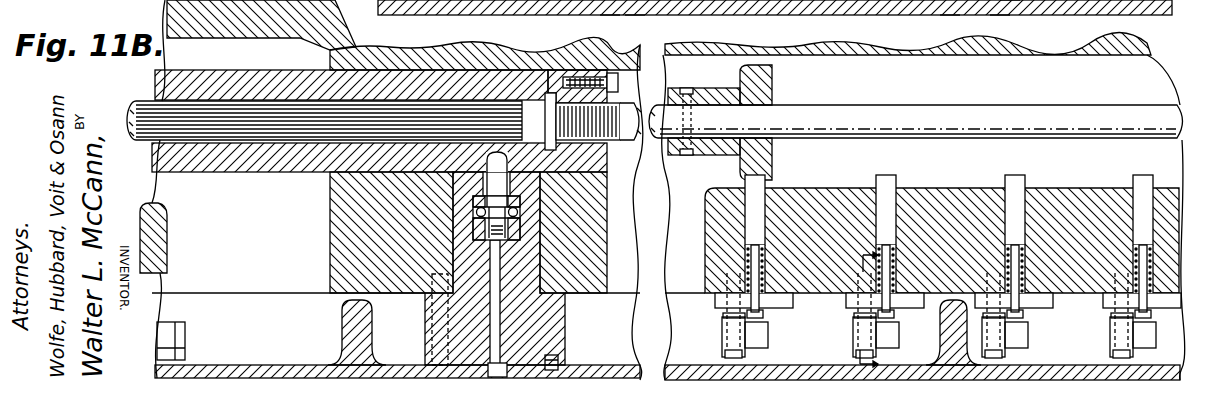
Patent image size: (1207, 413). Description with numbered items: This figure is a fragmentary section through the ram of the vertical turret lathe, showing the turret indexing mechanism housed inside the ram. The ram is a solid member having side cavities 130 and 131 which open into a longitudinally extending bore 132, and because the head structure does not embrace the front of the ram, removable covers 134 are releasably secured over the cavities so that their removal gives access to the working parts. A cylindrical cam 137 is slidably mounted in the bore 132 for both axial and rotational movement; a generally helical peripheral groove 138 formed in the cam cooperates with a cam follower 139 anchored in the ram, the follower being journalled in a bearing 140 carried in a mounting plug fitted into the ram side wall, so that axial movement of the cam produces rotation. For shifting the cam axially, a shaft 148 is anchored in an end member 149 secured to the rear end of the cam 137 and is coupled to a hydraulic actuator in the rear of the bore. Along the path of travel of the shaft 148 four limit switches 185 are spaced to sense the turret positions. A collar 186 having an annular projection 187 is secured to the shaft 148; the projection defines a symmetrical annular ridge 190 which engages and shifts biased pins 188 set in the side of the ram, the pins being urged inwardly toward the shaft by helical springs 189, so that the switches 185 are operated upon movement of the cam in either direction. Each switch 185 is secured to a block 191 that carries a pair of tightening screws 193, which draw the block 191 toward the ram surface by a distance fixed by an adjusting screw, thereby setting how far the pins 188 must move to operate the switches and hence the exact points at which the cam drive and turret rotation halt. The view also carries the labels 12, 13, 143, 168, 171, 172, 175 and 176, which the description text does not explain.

The machine frame 12 is at (766, 22).
The section line 13- 13 is at (850, 309).
The side cavity 130 is at (170, 278).
The side cavity 131 is at (603, 293).
The bore 132 is at (320, 173).
The removable cover 134 is at (284, 365).
The cylindrical cam 137 is at (222, 173).
The helical peripheral groove 138 is at (582, 121).
The cam follower 139 is at (505, 190).
The bearing 140 is at (520, 218).
The splined shaft 143 is at (146, 104).
The shaft 148 is at (940, 115).
The end member 149 is at (600, 172).
The top plate portion 168 is at (948, 12).
The top plate portion 171 is at (998, 12).
The top plate portion 172 is at (1008, 0).
The top plate portion 175 is at (608, 15).
The top plate portion 176 is at (634, 0).
The limit switch 185 is at (768, 336).
The collar 186 is at (720, 155).
The annular projection 187 is at (770, 180).
The biased pin 188 is at (745, 184).
The helical spring 189 is at (746, 267).
The annular ridge 190 is at (760, 60).
The block 191 is at (722, 338).
The tightening screw 193 is at (727, 314).